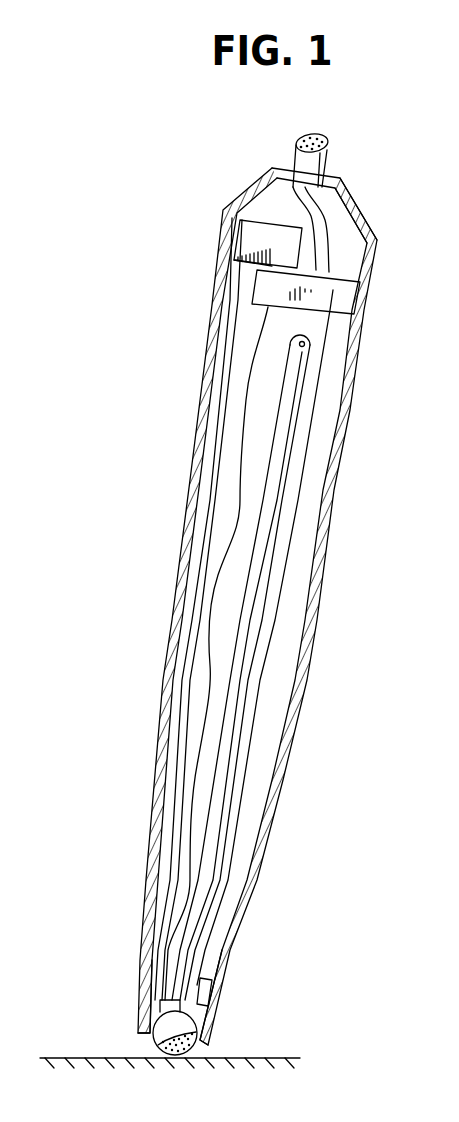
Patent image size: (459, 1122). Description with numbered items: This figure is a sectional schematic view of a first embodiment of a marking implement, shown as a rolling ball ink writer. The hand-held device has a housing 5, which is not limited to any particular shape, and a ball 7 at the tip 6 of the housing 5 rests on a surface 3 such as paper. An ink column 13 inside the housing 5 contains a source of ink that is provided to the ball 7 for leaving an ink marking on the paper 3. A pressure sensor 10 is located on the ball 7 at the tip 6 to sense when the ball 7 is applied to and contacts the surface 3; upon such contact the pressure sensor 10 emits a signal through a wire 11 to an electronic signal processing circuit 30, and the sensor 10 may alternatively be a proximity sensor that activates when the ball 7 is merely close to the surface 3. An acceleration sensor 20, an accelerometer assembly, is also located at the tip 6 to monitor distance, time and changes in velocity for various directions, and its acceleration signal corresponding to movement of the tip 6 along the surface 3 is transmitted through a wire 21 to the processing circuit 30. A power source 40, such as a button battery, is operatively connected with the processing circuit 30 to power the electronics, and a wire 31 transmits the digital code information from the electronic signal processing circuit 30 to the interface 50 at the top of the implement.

The surface 3 is at (268, 1058).
The housing 5 is at (193, 432).
The tip 6 is at (126, 1011).
The ball 7 is at (157, 1045).
The pressure sensor 10 is at (162, 1005).
The wire 11 is at (210, 663).
The ink column 13 is at (268, 500).
The acceleration sensor 20 is at (212, 987).
The wire 21 is at (272, 652).
The electronic signal processing circuit 30 is at (332, 296).
The wire 31 is at (375, 210).
The power source 40 is at (257, 242).
The interface 50 is at (323, 165).